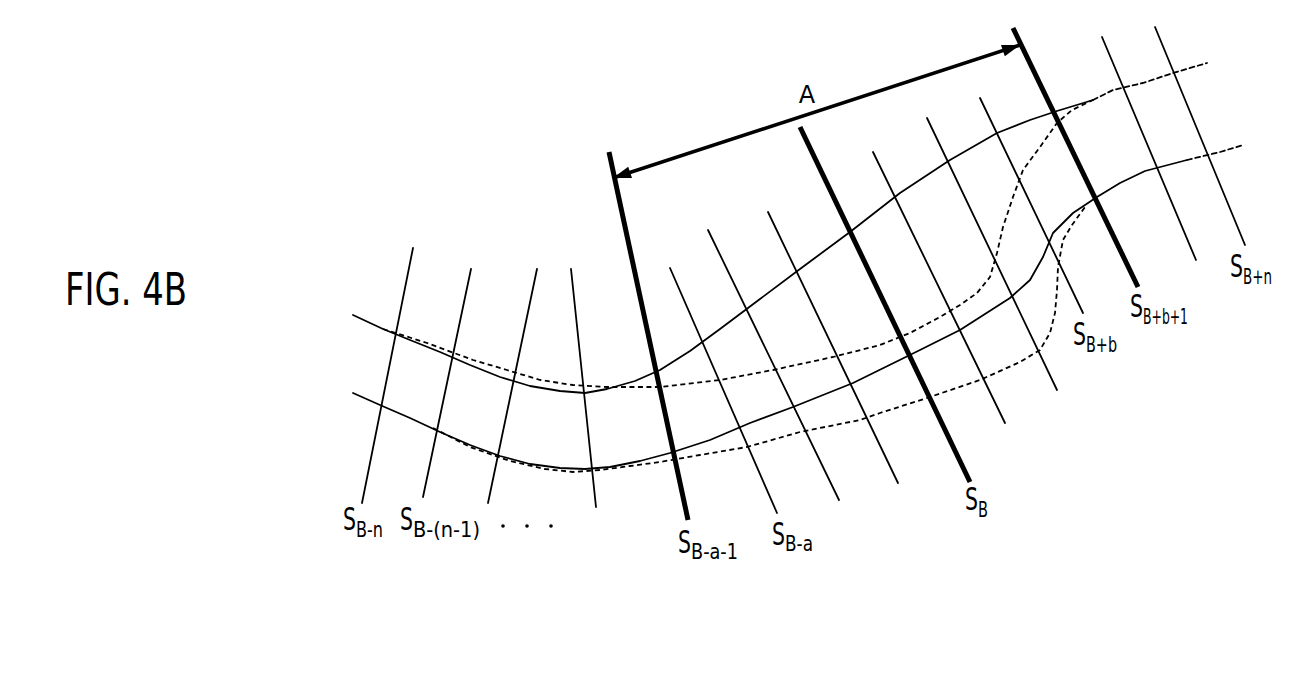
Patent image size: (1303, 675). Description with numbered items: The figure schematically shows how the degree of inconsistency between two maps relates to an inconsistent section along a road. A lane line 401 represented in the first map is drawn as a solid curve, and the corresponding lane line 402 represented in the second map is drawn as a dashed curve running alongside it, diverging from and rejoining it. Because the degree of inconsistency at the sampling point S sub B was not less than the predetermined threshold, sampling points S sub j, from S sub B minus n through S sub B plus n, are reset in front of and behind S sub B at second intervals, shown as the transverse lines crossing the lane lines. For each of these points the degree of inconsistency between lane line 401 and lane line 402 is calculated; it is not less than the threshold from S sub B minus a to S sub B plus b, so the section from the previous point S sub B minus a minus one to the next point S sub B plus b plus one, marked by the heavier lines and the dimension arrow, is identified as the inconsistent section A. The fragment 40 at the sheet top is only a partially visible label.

The imaging region 40 is at (397, 5).
The lane line represented in the first map 401 is at (1020, 121).
The lane line represented in the second map 402 is at (1040, 146).